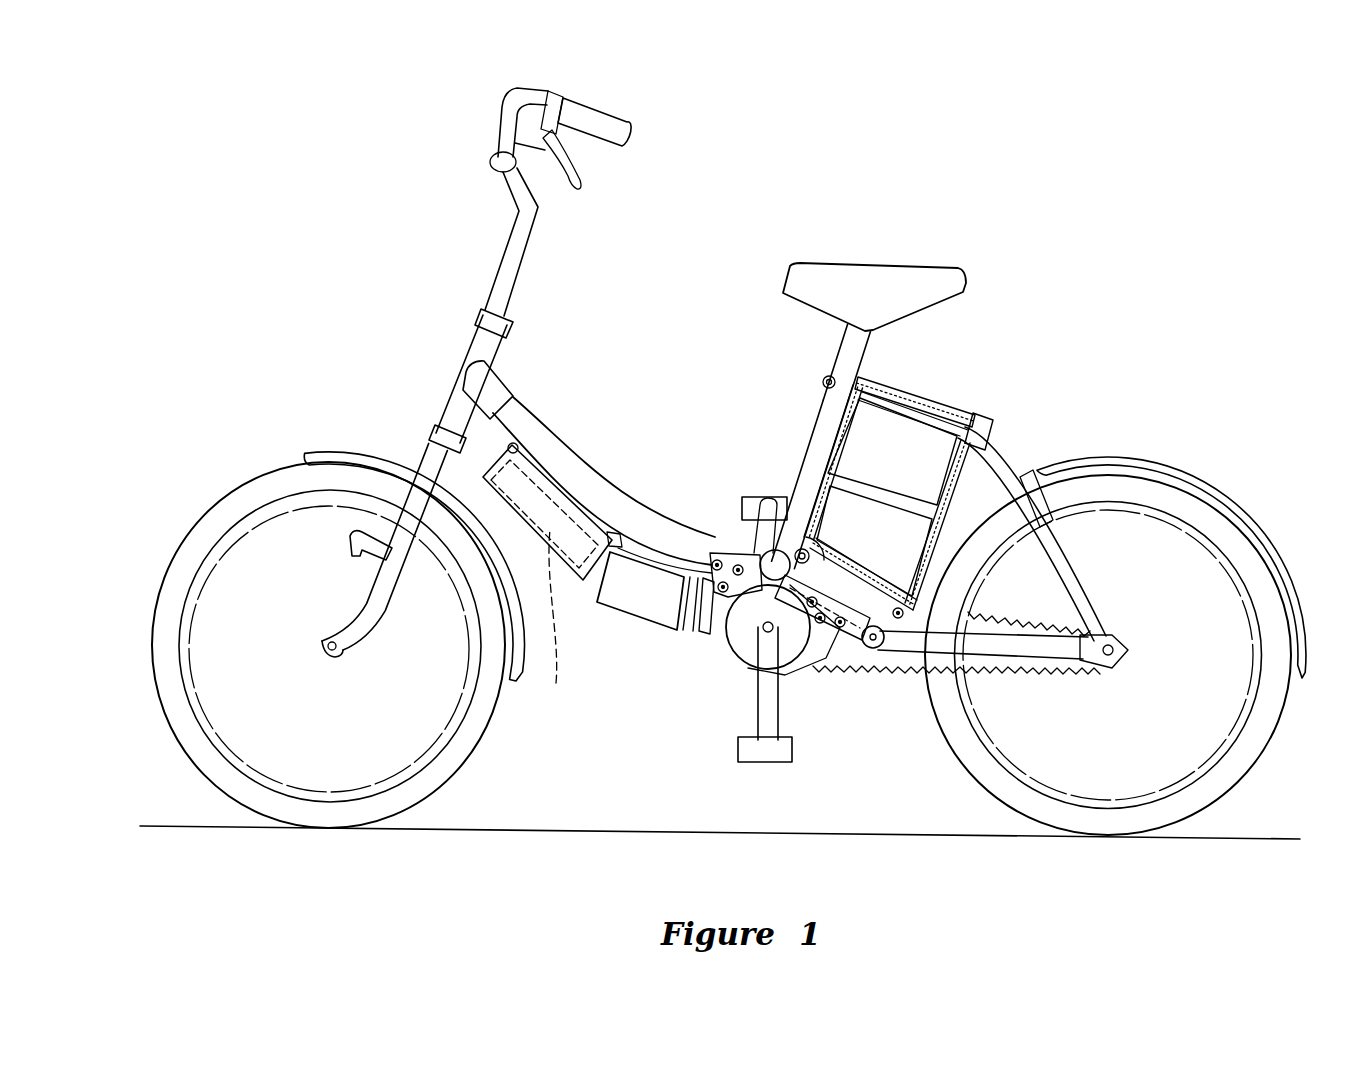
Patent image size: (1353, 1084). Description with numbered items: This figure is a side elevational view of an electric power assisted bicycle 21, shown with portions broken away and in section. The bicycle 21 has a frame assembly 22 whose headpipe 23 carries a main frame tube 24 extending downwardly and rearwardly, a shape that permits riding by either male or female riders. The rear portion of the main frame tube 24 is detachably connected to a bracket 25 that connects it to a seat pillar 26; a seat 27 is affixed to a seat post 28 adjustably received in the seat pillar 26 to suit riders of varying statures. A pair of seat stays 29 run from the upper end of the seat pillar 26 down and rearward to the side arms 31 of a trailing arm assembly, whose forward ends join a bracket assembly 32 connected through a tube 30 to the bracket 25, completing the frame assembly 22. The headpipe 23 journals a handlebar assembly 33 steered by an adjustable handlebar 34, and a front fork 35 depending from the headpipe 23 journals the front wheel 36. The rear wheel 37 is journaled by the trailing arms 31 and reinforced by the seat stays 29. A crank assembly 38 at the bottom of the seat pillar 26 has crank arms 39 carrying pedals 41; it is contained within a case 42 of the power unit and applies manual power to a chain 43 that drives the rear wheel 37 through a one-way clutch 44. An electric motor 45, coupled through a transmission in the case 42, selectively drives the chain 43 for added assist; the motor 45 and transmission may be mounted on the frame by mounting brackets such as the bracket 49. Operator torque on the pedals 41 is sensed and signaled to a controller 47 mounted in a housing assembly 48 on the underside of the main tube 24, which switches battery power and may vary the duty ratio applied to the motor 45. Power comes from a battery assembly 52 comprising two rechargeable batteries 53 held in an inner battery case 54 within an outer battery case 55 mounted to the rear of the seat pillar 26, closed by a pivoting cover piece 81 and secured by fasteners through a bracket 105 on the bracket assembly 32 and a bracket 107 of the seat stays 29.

The electric power assisted bicycle 21 is at (1095, 277).
The frame assembly 22 is at (445, 387).
The headpipe 23 is at (483, 340).
The main frame tube 24 is at (637, 513).
The bracket 25 is at (722, 548).
The seat pillar 26 is at (832, 405).
The seat 27 is at (868, 278).
The seat post 28 is at (873, 357).
The seat stays 29 is at (1065, 580).
The tube 30 is at (855, 640).
The side arms 31 is at (1060, 650).
The bracket assembly 32 is at (880, 660).
The handlebar assembly 33 is at (526, 244).
The adjustable handlebar 34 is at (508, 90).
The front fork 35 is at (367, 617).
The front wheel 36 is at (262, 490).
The rear wheel 37 is at (1185, 503).
The crank assembly 38 is at (780, 655).
The crank arms 39 is at (722, 540).
The pedals 41 is at (752, 497).
The case 42 is at (727, 648).
The chain 43 is at (936, 569).
The one-way clutch 44 is at (1108, 665).
The electric motor 45 is at (642, 607).
The controller 47 is at (555, 623).
The housing assembly 48 is at (552, 533).
The mounting bracket 49 is at (716, 588).
The battery assembly 52 is at (1072, 395).
The rechargeable electric batteries 53 is at (843, 513).
The inner battery case 54 is at (980, 672).
The outer battery case 55 is at (958, 520).
The cover piece 81 is at (945, 400).
The bracket 105 is at (885, 660).
The bracket 107 is at (1013, 453).